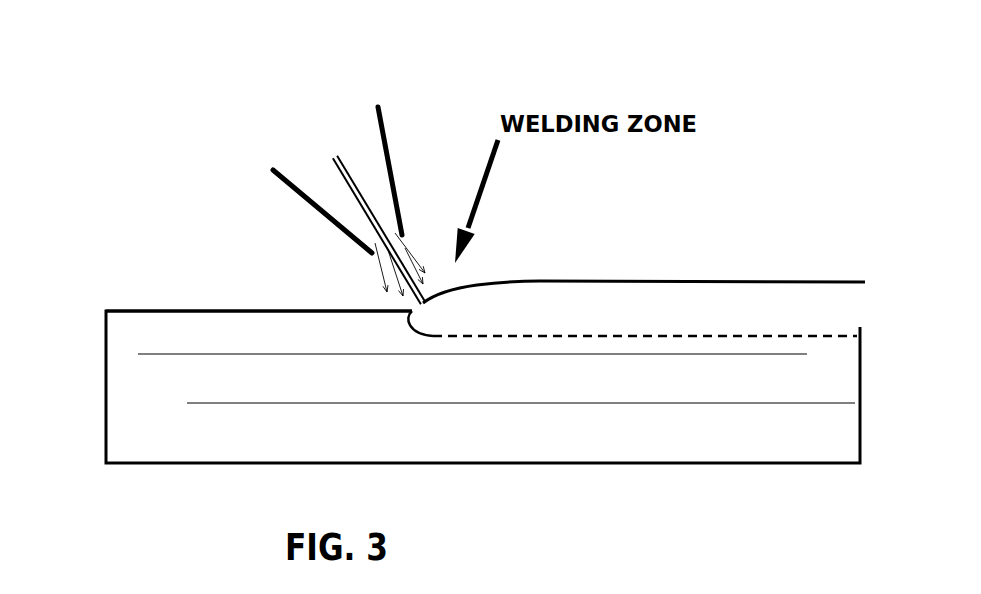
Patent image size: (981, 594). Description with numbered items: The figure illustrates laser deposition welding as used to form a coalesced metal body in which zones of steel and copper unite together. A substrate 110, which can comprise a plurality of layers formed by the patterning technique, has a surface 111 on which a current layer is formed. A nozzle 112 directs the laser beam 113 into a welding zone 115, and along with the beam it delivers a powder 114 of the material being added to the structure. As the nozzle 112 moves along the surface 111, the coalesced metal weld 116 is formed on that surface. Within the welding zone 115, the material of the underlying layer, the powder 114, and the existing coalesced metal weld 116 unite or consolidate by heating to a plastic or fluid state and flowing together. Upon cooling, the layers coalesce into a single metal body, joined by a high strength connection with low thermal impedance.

The substrate 110 is at (203, 438).
The surface 111 is at (150, 310).
The nozzle 112 is at (393, 170).
The laser beam 113 is at (340, 172).
The powder 114 is at (385, 261).
The welding zone 115 is at (447, 315).
The coalesced metal weld 116 is at (753, 290).